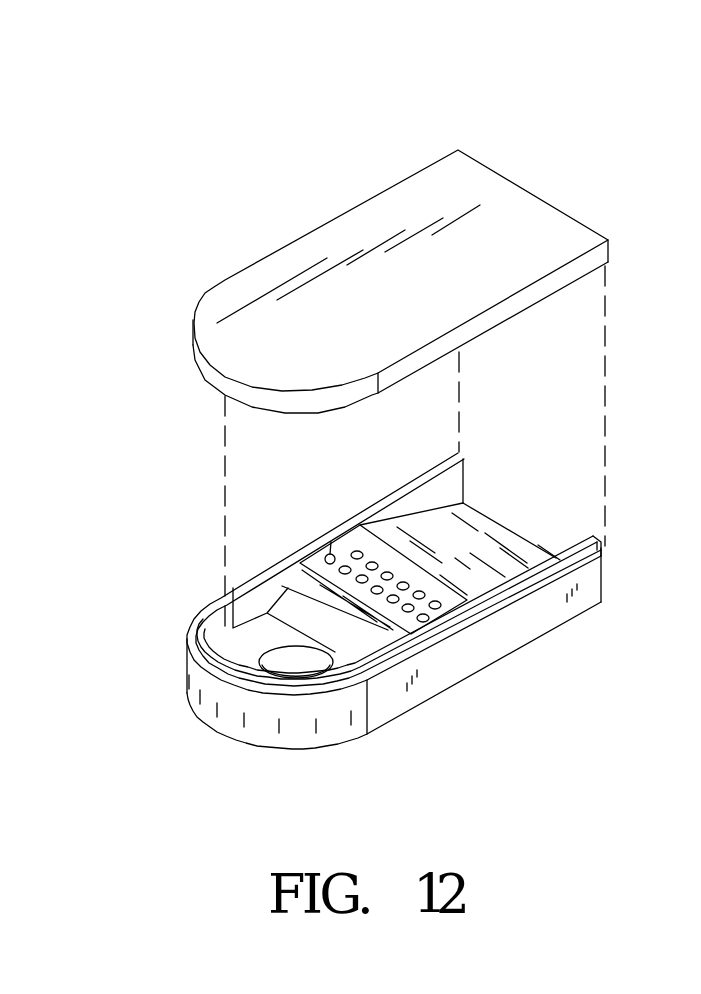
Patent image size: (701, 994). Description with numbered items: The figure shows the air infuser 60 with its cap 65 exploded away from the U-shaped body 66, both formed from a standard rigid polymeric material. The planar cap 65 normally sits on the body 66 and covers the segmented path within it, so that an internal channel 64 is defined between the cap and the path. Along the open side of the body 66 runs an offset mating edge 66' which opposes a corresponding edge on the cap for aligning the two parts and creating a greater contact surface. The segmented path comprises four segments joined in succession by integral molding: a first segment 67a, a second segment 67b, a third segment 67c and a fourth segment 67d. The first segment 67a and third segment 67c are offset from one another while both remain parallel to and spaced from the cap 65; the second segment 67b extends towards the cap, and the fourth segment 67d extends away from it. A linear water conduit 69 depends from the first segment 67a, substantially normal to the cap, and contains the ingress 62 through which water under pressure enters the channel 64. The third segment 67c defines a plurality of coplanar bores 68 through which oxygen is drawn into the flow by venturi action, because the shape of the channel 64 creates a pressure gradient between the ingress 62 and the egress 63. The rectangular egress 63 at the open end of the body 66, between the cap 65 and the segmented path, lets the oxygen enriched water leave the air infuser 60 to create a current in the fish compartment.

The air infuser 60 is at (93, 126).
The ingress 62 is at (302, 658).
The egress 63 is at (510, 509).
The internal channel 64 is at (530, 540).
The cap 65 is at (375, 338).
The U-shaped body 66 is at (394, 601).
The offset mating edge 66' is at (443, 607).
The first segment 67a is at (275, 638).
The second segment 67b is at (293, 592).
The third segment 67c is at (347, 540).
The fourth segment 67d is at (413, 528).
The bore 68 is at (331, 534).
The water conduit 69 is at (290, 657).